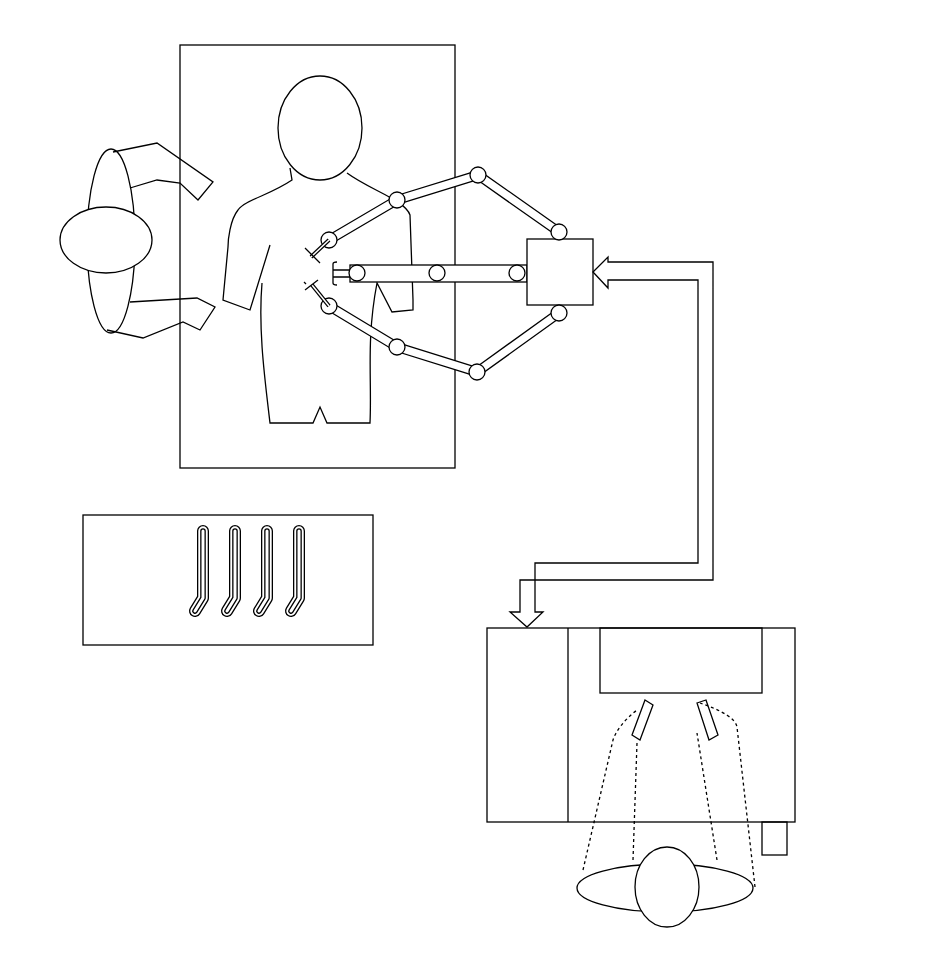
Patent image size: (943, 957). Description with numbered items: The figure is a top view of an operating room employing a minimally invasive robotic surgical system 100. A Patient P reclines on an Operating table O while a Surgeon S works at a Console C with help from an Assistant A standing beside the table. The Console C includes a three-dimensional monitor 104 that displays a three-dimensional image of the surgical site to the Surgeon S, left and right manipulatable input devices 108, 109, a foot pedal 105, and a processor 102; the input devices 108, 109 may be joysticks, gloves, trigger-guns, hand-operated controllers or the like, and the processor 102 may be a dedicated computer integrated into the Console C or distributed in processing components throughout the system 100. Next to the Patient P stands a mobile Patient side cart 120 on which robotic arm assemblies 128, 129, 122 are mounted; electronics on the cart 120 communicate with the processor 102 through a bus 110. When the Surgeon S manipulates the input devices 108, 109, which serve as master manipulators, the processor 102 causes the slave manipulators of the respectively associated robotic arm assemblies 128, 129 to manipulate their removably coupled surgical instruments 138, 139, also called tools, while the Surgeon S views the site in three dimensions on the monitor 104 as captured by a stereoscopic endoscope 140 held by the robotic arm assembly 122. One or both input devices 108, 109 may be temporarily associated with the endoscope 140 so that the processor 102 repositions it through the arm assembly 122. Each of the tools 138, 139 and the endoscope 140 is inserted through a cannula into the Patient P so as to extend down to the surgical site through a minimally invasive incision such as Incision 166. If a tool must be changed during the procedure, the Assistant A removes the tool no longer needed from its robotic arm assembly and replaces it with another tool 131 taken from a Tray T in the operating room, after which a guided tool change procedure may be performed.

The minimally invasive robotic surgical system 100 is at (648, 117).
The processor 102 is at (545, 736).
The 3-D monitor 104 is at (700, 671).
The foot pedal 105 is at (775, 855).
The left manipulatable input device 108 is at (657, 735).
The right manipulatable input device 109 is at (698, 748).
The bus 110 is at (698, 520).
The mobile Patient side cart 120 is at (544, 283).
The robotic arm assembly 122 is at (457, 257).
The robotic arm assembly 128 is at (471, 333).
The robotic arm assembly 129 is at (512, 155).
The tool 131 is at (183, 586).
The surgical instrument 138 is at (298, 309).
The surgical instrument 139 is at (314, 222).
The stereoscopic endoscope 140 is at (357, 250).
The incision 166 is at (296, 275).
The operating table O is at (390, 44).
The patient P is at (268, 188).
The assistant A is at (85, 298).
The tray T is at (113, 515).
The console C is at (658, 747).
The surgeon S is at (668, 816).